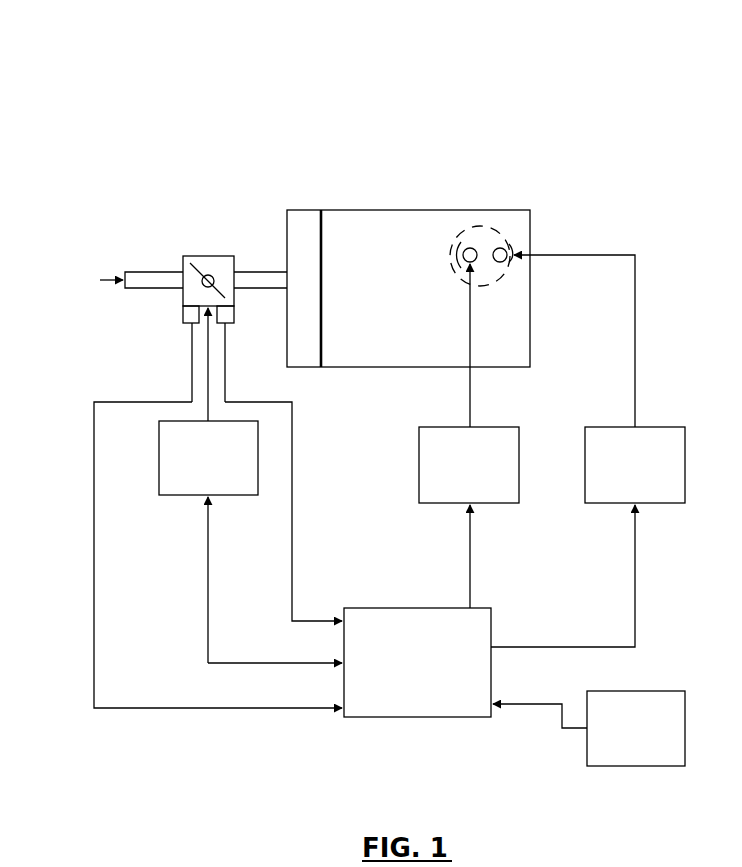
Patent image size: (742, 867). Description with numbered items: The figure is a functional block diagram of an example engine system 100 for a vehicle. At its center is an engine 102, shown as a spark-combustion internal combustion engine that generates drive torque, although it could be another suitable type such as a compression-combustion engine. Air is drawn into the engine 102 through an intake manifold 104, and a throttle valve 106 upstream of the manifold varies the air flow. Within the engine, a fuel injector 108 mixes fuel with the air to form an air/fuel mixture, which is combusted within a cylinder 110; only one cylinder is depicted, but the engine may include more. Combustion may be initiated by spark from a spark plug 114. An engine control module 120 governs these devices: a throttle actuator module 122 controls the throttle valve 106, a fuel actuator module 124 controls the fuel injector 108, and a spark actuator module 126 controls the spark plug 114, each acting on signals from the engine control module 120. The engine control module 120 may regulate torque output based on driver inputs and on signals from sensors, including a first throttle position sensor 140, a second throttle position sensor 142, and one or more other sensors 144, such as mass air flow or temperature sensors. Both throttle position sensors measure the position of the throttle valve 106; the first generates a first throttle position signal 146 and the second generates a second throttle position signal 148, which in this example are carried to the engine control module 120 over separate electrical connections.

The engine system 100 is at (66, 70).
The engine 102 is at (378, 210).
The intake manifold 104 is at (306, 210).
The throttle valve 106 is at (210, 256).
The fuel injector 108 is at (467, 247).
The cylinder 110 is at (450, 234).
The spark plug 114 is at (503, 247).
The engine control module 120 is at (380, 608).
The throttle actuator module 122 is at (159, 457).
The fuel actuator module 124 is at (440, 427).
The spark actuator module 126 is at (602, 427).
The first throttle position sensor 140 is at (183, 315).
The second throttle position sensor 142 is at (234, 315).
The other sensors 144 is at (685, 728).
The first throttle position signal 146 is at (94, 480).
The second throttle position signal 148 is at (292, 480).